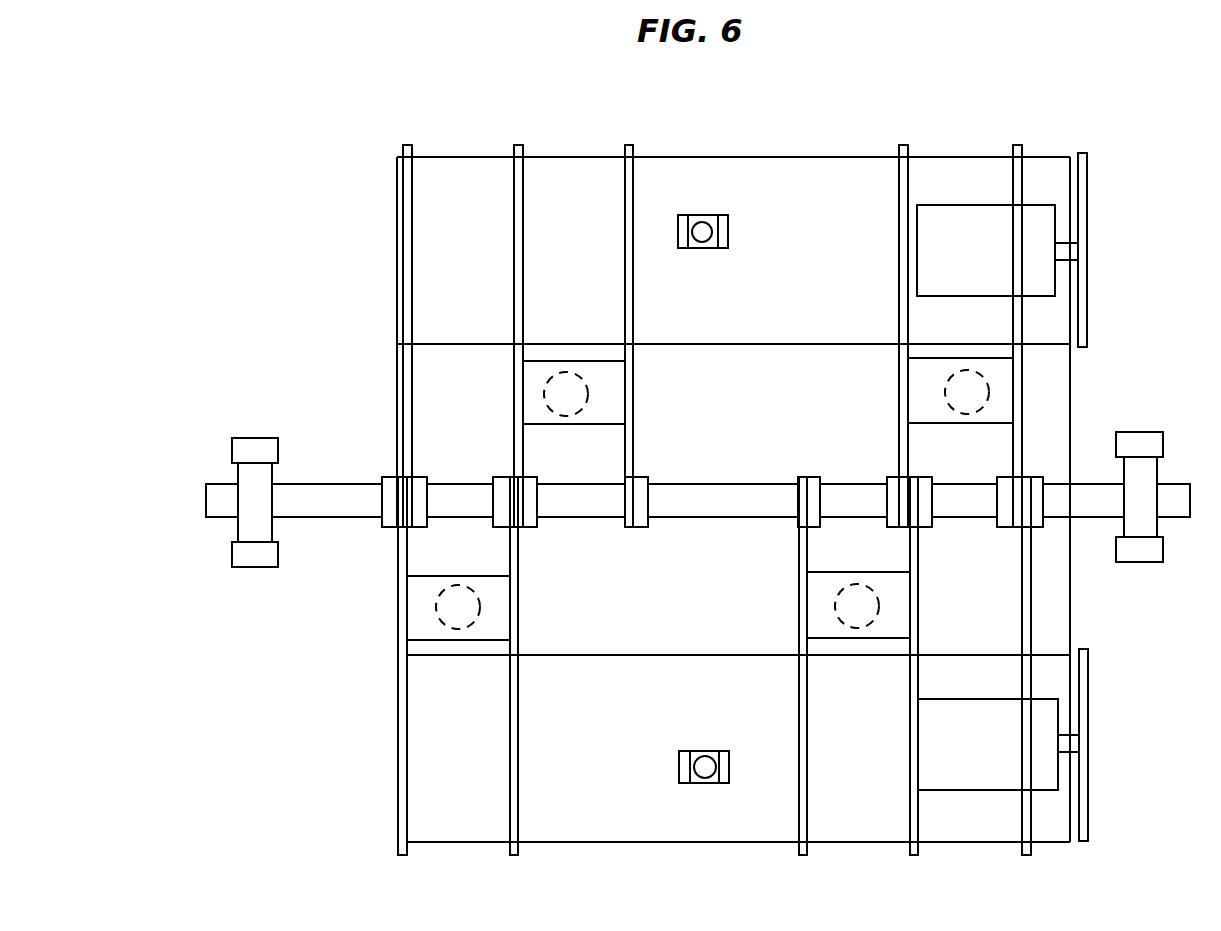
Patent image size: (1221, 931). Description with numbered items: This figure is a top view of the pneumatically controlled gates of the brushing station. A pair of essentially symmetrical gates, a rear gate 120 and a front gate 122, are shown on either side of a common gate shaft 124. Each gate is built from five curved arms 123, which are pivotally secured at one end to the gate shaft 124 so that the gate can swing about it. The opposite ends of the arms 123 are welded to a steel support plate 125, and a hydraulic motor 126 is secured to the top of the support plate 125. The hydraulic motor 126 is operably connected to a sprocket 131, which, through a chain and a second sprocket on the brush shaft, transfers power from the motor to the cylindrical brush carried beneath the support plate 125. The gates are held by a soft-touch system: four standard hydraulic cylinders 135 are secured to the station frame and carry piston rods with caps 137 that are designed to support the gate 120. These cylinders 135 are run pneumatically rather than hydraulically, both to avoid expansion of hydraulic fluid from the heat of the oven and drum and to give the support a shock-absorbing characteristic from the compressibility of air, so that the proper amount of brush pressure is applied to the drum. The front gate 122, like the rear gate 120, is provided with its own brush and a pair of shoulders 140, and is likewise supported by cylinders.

The rear gate 120 is at (303, 264).
The front gate 122 is at (304, 757).
The curved arms 123 is at (406, 147).
The gate shaft 124 is at (318, 514).
The steel support plate 125 is at (433, 313).
The hydraulic motor 126 is at (950, 222).
The sprocket 131 is at (1087, 220).
The hydraulic cylinders 135 is at (533, 415).
The caps 137 is at (555, 384).
The shoulders 140 is at (416, 627).